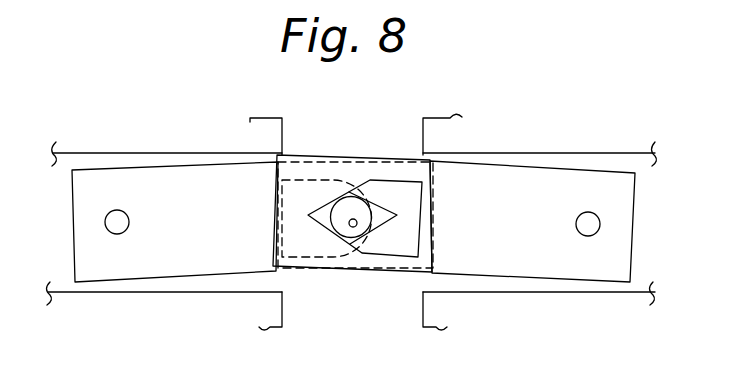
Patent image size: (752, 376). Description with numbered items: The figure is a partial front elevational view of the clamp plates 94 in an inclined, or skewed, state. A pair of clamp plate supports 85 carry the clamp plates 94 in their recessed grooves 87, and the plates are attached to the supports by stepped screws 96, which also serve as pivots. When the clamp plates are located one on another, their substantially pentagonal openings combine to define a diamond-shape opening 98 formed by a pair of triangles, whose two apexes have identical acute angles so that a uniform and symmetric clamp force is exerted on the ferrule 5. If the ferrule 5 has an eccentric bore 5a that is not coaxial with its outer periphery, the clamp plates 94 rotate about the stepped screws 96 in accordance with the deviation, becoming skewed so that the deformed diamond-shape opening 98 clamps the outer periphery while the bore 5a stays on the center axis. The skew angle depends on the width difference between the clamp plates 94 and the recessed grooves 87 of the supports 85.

The ferrule 5 is at (356, 204).
The eccentric bore 5a is at (357, 225).
The clamp plate supports 85 is at (180, 135).
The recessed grooves 87 is at (95, 167).
The clamp plates 94 is at (163, 269).
The stepped screws 96 is at (116, 233).
The diamond-shape opening 98 is at (327, 222).